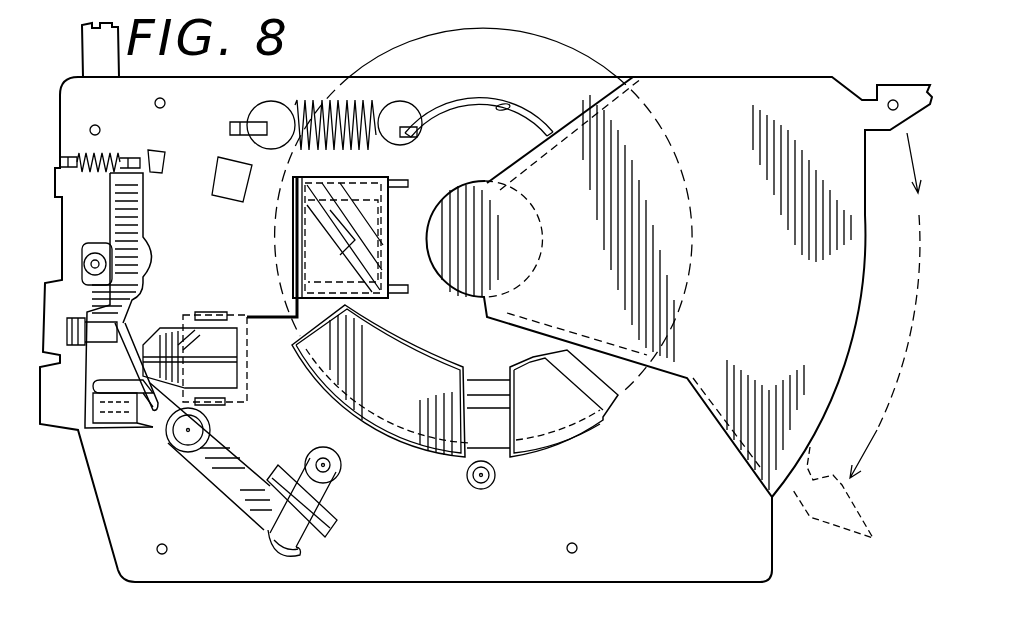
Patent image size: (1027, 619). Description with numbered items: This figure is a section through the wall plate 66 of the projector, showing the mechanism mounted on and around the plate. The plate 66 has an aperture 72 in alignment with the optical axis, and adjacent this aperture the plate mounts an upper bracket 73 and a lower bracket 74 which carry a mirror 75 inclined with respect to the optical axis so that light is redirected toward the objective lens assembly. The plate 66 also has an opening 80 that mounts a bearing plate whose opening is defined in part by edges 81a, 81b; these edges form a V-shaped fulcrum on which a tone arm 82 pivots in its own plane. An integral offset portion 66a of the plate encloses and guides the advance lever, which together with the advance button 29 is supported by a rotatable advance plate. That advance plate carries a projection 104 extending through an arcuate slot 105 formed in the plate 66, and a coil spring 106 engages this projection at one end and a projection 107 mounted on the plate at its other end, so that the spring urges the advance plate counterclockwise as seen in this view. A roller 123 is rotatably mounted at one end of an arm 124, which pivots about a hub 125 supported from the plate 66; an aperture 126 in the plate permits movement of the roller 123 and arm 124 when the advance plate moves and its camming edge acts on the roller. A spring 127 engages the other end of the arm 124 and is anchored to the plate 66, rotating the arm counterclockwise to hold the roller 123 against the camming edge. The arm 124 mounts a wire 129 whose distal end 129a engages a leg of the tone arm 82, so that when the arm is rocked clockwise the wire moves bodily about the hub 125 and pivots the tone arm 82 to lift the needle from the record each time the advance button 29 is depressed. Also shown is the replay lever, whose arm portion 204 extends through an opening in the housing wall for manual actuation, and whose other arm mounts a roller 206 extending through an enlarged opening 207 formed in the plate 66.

The wall plate 66 is at (637, 494).
The integral offset portion 66a is at (780, 302).
The advance button 29 is at (893, 85).
The arm portion of replay lever 204 is at (82, 48).
The spring 127 is at (100, 152).
The projection 107 is at (230, 128).
The coil spring 106 is at (333, 97).
The projection 104 is at (460, 114).
The arcuate slot 105 is at (515, 108).
The aperture 72 is at (388, 205).
The upper bracket 73 is at (408, 183).
The lower bracket 74 is at (408, 289).
The mirror 75 is at (375, 278).
The tone arm 82 is at (215, 367).
The bearing plate edge 81b is at (205, 404).
The opening 80 is at (247, 338).
The bearing plate edge 81a is at (183, 340).
The enlarged opening 207 is at (158, 262).
The roller 206 is at (90, 245).
The distal end of wire 129a is at (140, 306).
The wire 129 is at (158, 432).
The hub 125 is at (197, 446).
The arm 124 is at (240, 493).
The roller 123 is at (335, 474).
The aperture 126 is at (305, 550).